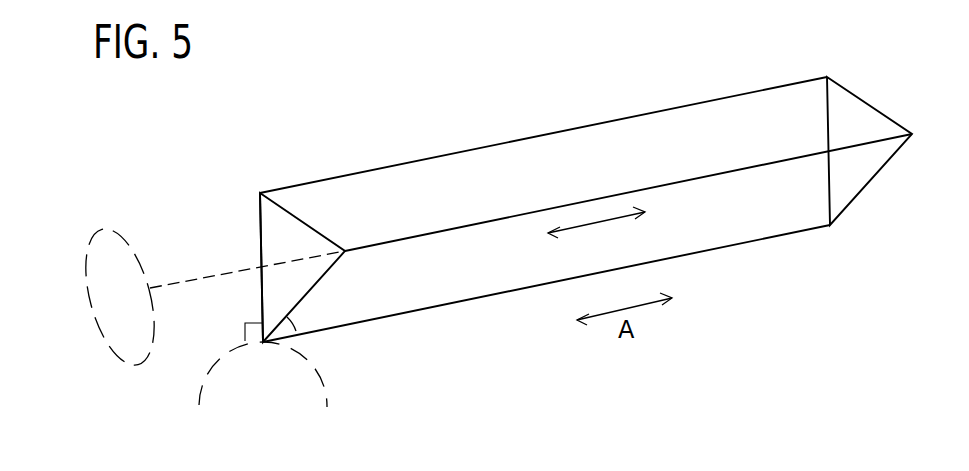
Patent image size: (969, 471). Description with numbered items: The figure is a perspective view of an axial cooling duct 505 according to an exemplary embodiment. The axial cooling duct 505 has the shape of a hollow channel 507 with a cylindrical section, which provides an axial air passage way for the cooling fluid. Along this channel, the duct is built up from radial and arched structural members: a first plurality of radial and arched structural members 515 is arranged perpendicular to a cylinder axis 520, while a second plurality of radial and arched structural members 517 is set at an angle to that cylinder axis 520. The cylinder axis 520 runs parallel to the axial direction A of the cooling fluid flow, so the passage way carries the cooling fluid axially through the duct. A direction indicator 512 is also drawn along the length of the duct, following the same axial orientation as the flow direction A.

The axial cooling duct 505 is at (257, 175).
The hollow channel 507 is at (100, 230).
The light travel direction in prism 512 is at (597, 223).
The first plurality of radial and arched structural members 515 is at (260, 293).
The second plurality of radial and arched structural members 517 is at (317, 287).
The cylinder axis 520 is at (217, 275).